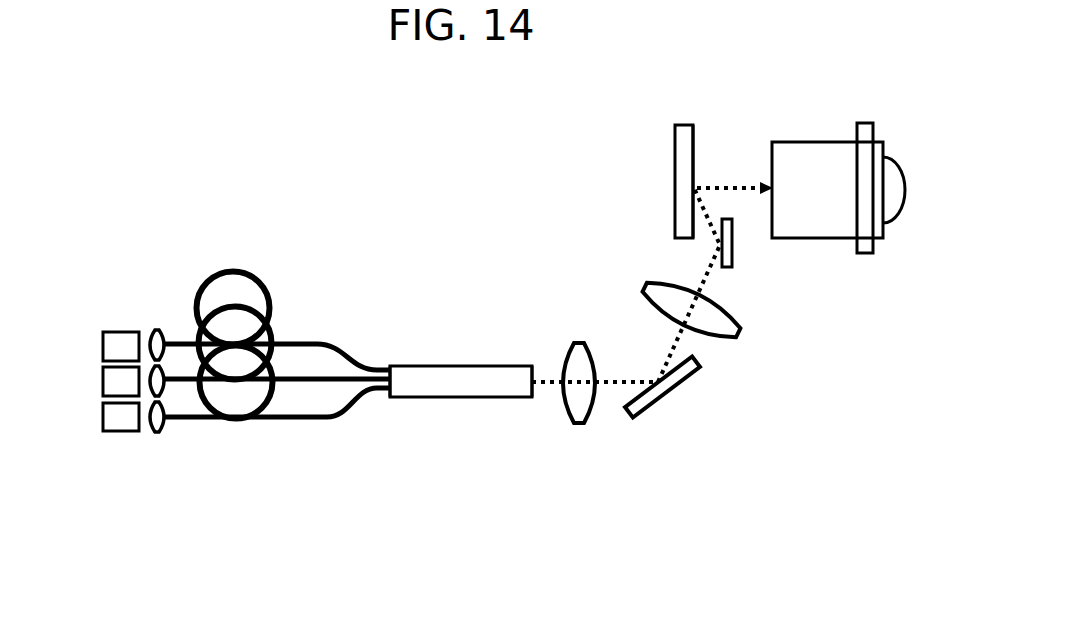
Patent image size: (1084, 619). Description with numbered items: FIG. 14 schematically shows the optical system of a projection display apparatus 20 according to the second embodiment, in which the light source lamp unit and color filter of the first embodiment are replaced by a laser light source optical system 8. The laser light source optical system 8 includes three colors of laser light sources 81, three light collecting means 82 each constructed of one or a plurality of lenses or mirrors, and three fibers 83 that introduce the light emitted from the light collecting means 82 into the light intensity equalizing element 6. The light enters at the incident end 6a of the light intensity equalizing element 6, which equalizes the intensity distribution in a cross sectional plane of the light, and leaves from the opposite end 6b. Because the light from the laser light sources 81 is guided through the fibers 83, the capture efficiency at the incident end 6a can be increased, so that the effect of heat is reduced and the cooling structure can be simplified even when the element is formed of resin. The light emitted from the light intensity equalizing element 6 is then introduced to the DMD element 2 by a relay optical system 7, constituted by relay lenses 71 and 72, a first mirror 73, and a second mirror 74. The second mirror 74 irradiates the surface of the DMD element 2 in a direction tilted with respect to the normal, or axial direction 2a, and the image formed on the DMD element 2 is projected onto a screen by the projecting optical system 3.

The light source apparatus 20 is at (485, 550).
The laser light source optical system 8 is at (245, 425).
The laser light sources 81 is at (119, 433).
The light collecting means 82 is at (160, 434).
The fibers 83 is at (277, 392).
The light intensity equalizing element 6 is at (459, 380).
The incident end 6a is at (390, 398).
The emission end face 6b is at (532, 398).
The relay optical system 7 is at (658, 336).
The relay lens 71 is at (583, 412).
The relay lens 72 is at (659, 391).
The first mirror 73 is at (665, 296).
The second mirror 74 is at (668, 242).
The DMD element 2 is at (678, 160).
The axial direction 2a is at (693, 165).
The projecting optical system 3 is at (888, 115).